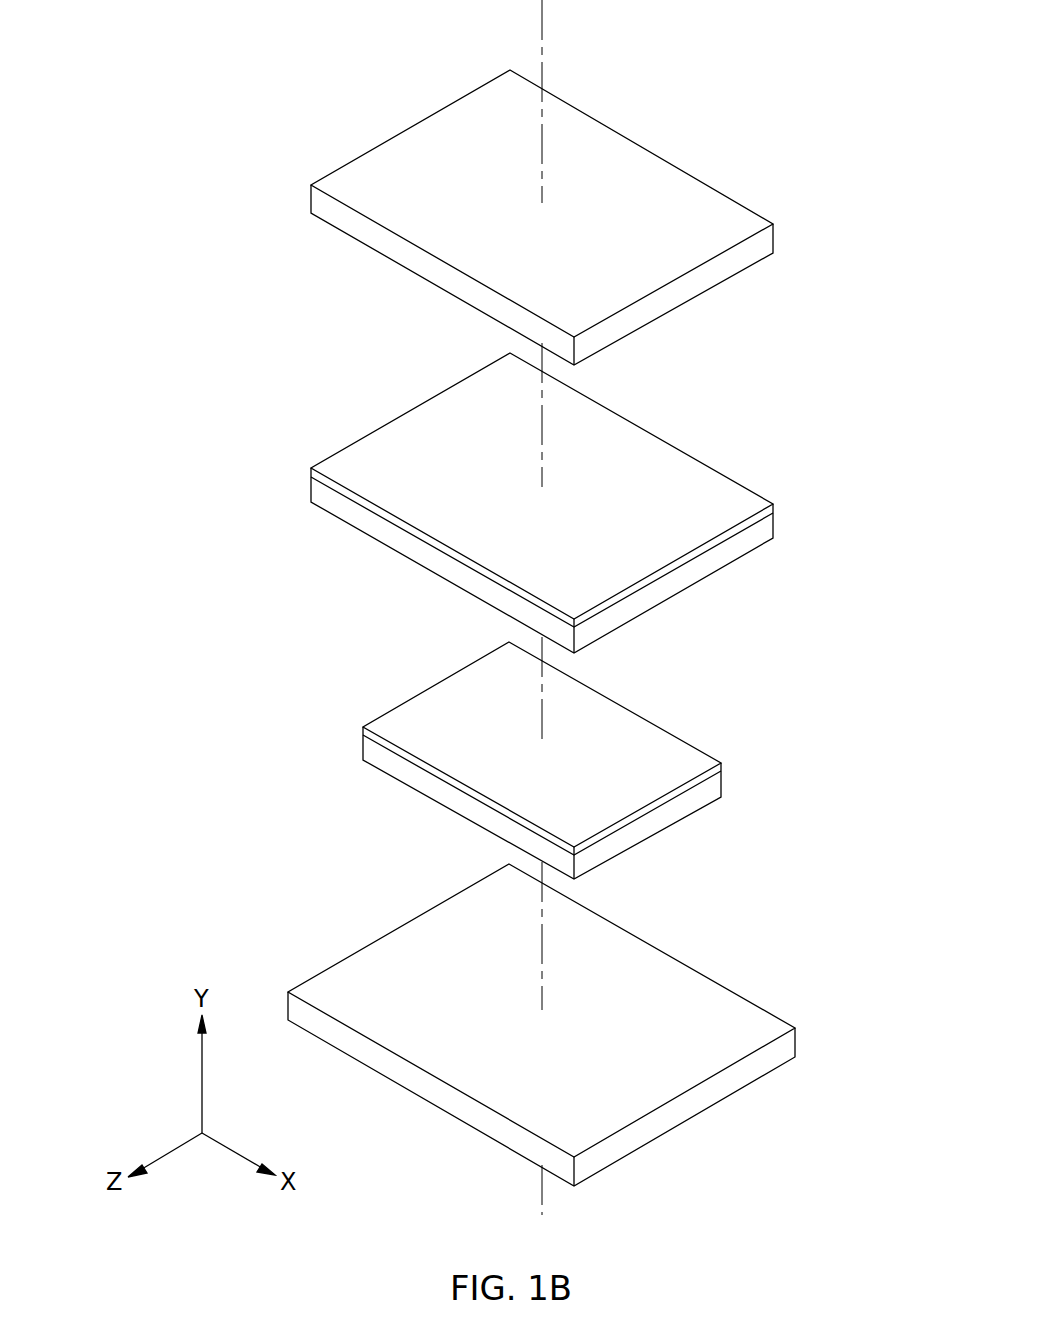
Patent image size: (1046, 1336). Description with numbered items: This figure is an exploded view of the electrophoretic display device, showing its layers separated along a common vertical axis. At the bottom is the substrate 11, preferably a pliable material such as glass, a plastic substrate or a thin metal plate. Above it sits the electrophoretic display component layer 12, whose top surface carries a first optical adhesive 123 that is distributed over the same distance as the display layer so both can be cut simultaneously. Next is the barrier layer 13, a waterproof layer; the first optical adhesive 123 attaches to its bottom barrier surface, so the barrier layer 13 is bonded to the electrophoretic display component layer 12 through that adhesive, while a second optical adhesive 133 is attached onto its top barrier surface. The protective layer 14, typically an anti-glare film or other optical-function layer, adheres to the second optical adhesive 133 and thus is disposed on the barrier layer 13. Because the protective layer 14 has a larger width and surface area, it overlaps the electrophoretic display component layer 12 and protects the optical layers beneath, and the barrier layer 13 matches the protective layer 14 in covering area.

The substrate 11 is at (768, 1063).
The electrophoretic display component layer 12 is at (557, 760).
The first optical adhesive 123 is at (682, 762).
The barrier layer 13 is at (543, 503).
The second optical adhesive 133 is at (735, 502).
The protective layer 14 is at (318, 197).